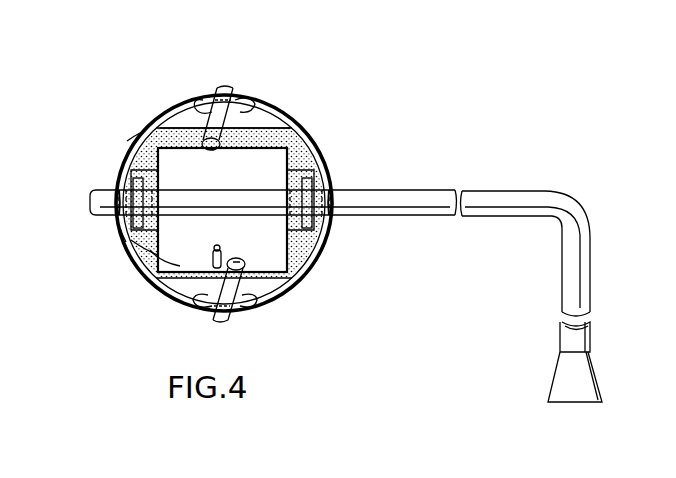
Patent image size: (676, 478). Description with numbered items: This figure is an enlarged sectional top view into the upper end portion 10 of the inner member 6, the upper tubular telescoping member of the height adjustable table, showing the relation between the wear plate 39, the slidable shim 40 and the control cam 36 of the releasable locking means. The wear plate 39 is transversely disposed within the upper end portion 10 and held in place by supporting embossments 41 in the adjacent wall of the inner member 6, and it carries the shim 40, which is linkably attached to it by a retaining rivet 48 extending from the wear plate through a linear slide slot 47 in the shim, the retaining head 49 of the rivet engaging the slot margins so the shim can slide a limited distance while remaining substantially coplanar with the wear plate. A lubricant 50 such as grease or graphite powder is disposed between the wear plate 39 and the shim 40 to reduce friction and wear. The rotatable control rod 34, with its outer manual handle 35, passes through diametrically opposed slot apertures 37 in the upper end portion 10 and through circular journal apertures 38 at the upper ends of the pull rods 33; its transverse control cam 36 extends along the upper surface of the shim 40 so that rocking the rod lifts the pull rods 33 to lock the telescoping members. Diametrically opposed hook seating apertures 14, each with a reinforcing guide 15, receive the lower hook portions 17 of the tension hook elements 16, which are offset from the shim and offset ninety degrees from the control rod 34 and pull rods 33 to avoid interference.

The inner member 6 is at (300, 137).
The upper end portion 10 is at (285, 107).
The hook seating aperture 14 is at (228, 88).
The reinforcing guide 15 is at (252, 104).
The hook element 16 is at (205, 147).
The lower hook portion 17 is at (215, 150).
The pull rod 33 is at (122, 180).
The control rod 34 is at (385, 192).
The manual handle 35 is at (562, 297).
The control cam 36 is at (223, 196).
The slot aperture 37 is at (117, 220).
The journal aperture 38 is at (137, 144).
The wear plate 39 is at (118, 241).
The shim 40 is at (160, 240).
The supporting embossment 41 is at (181, 106).
The linear slide slot 47 is at (216, 246).
The retaining rivet 48 is at (148, 252).
The retaining head 49 is at (212, 261).
The lubricant 50 is at (214, 126).